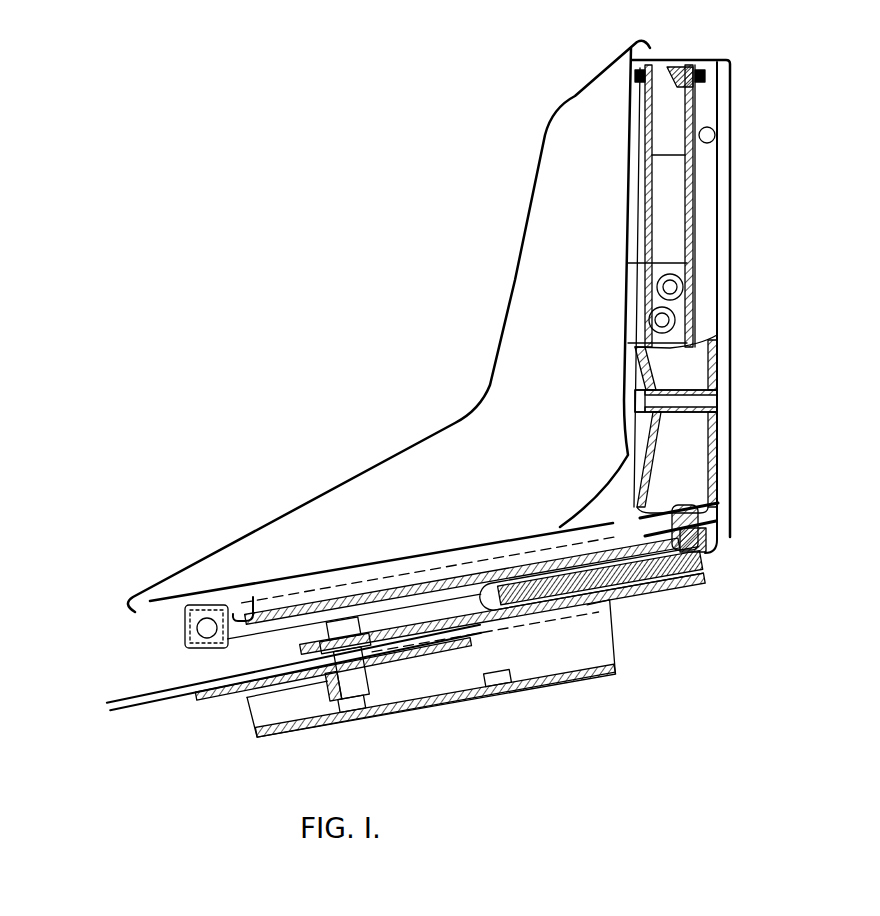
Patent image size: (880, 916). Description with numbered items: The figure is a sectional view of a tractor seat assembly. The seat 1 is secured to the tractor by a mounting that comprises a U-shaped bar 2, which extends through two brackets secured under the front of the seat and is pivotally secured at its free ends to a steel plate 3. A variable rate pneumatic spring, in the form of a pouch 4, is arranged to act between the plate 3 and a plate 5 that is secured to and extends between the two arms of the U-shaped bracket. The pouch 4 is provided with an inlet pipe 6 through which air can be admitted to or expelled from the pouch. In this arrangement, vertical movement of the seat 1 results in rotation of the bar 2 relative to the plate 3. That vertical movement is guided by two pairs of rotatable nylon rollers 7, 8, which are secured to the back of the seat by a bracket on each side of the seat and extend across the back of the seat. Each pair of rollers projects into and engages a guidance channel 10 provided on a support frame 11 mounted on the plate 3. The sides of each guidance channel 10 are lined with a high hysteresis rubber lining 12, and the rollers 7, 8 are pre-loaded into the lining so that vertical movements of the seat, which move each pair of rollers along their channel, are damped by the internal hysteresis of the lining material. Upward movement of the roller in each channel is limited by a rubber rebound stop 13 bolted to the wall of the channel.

The seat 1 is at (360, 482).
The U-shaped bar 2 is at (252, 607).
The steel plate 3 is at (597, 605).
The pouch 4 is at (548, 578).
The plate 5 is at (432, 585).
The inlet pipe 6 is at (680, 507).
The rotatable nylon roller 7 is at (657, 283).
The rotatable nylon roller 8 is at (650, 325).
The guidance channel 10 is at (643, 205).
The support frame 11 is at (720, 237).
The high hysteresis rubber lining 12 is at (645, 148).
The rubber rebound stop 13 is at (680, 67).